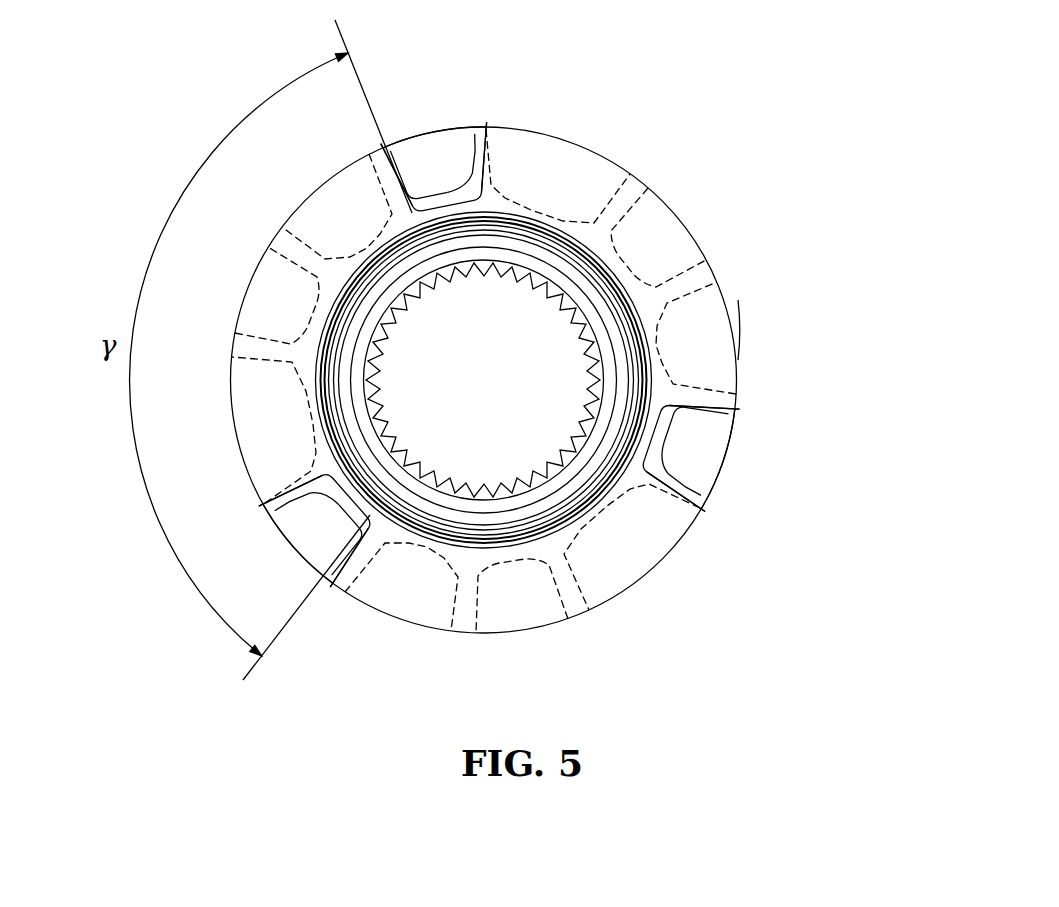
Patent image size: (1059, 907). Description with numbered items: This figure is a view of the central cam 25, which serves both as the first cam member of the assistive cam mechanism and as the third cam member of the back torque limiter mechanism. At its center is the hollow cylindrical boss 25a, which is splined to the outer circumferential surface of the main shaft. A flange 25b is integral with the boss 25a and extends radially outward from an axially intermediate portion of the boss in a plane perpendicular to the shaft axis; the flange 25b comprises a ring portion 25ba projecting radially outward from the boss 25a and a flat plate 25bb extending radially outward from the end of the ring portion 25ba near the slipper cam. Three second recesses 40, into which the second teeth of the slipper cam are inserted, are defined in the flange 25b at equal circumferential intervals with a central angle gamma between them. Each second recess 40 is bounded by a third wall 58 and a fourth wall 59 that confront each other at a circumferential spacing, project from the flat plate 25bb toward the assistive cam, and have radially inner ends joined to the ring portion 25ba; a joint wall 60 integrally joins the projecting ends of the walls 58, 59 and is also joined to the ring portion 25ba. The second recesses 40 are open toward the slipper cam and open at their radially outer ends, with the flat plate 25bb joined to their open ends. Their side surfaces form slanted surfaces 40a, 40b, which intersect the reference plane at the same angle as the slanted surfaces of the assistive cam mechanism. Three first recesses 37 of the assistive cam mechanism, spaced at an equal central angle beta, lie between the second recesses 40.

The central cam 25 is at (571, 134).
The hollow cylindrical boss 25a is at (613, 290).
The flange 25b is at (735, 330).
The ring portion 25ba is at (490, 200).
The flat plate 25bb is at (590, 160).
The first recess 37 is at (660, 228).
The second recess 40 is at (437, 163).
The slanted surface 40a is at (477, 150).
The slanted surface 40b is at (403, 150).
The third wall 58 is at (493, 150).
The fourth wall 59 is at (393, 172).
The joint wall 60 is at (453, 135).